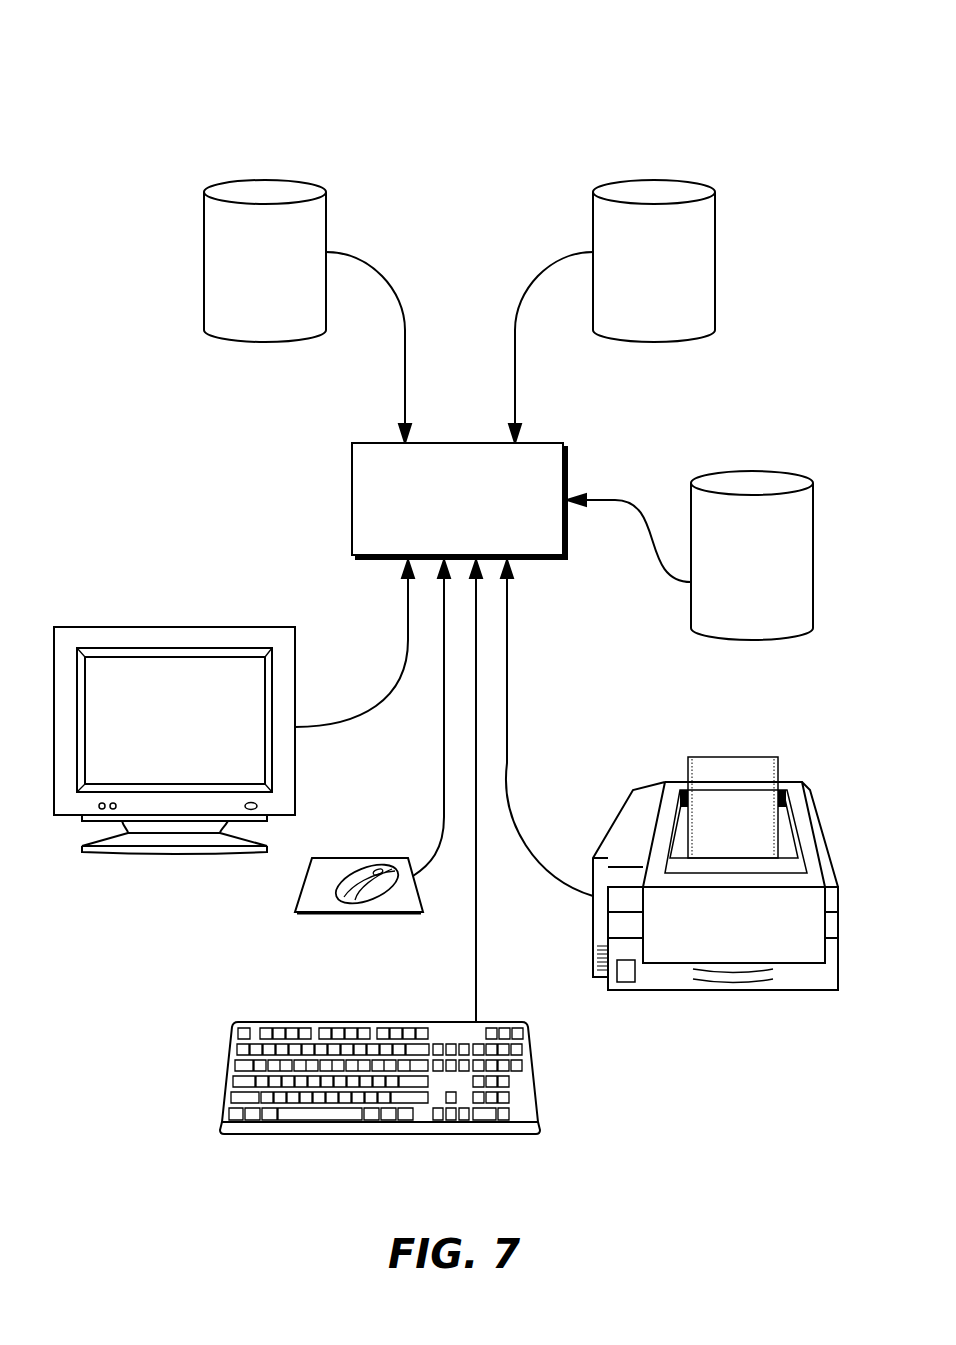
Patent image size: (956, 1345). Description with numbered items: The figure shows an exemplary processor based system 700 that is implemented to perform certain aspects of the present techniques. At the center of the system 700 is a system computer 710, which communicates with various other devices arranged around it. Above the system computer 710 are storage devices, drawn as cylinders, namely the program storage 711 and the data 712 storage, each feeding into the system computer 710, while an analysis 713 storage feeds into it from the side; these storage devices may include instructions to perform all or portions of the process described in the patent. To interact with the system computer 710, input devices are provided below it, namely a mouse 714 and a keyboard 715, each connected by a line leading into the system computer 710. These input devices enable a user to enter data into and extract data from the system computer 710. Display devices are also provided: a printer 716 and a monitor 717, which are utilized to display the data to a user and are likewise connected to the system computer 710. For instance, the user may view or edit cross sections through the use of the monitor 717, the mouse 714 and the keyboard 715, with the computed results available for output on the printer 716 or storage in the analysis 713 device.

The system 700 is at (190, 42).
The system computer 710 is at (352, 500).
The program storage 711 is at (286, 180).
The data 712 is at (672, 180).
The analysis 713 is at (767, 472).
The mouse 714 is at (328, 858).
The keyboard 715 is at (283, 1022).
The printer 716 is at (768, 990).
The monitor 717 is at (210, 627).